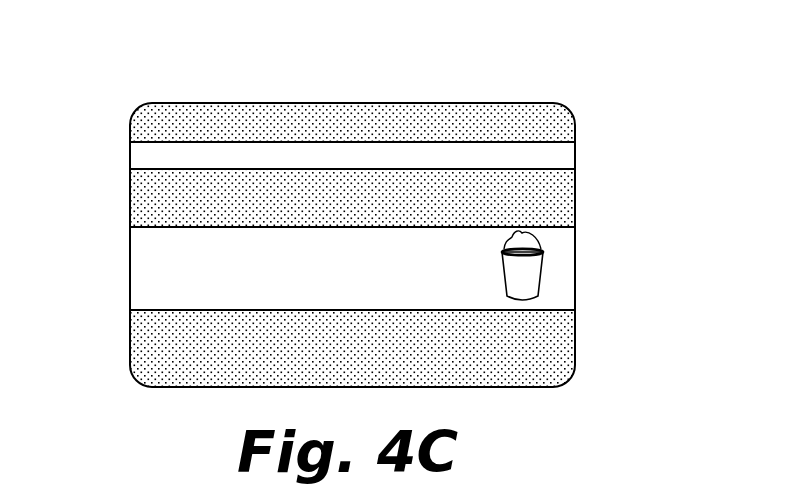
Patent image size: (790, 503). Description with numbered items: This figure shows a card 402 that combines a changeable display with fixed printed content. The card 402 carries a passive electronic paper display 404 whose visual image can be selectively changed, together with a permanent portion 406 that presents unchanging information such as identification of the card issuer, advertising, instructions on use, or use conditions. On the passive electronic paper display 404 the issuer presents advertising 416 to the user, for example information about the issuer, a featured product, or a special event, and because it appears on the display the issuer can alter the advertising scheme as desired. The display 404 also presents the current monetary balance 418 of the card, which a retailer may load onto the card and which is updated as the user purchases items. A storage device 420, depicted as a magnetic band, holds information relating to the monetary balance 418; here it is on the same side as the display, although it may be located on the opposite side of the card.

The card 402 is at (253, 72).
The passive electronic paper display 404 is at (413, 269).
The permanent portion 406 is at (407, 347).
The advertising 416 is at (467, 229).
The monetary balance 418 is at (132, 215).
The storage device 420 is at (404, 140).